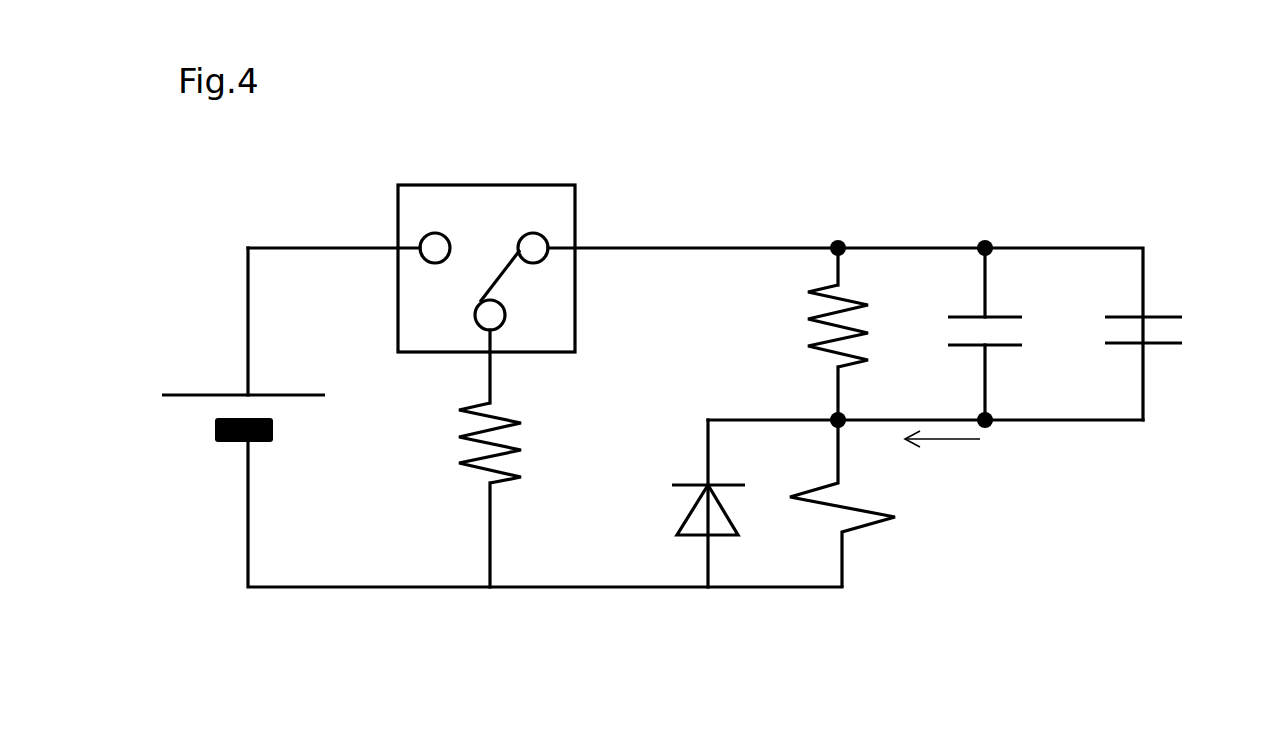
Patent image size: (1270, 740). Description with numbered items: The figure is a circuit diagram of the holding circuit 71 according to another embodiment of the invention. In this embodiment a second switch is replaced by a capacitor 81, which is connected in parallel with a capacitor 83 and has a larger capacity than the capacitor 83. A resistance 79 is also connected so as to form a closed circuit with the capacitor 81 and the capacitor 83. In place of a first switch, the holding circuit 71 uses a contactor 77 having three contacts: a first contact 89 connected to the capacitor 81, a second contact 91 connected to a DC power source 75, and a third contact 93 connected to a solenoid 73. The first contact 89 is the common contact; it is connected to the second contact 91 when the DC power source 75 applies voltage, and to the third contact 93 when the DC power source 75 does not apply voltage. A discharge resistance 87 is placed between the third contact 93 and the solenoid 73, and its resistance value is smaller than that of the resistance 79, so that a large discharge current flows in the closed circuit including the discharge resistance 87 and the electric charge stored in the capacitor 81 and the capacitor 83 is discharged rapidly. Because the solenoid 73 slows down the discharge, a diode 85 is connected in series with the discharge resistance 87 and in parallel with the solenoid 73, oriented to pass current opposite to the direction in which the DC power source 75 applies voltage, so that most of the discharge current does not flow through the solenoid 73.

The holding circuit 71 is at (1077, 212).
The solenoid 73 is at (910, 523).
The DC power source 75 is at (305, 425).
The contactor 77 is at (565, 185).
The resistance 79 is at (795, 322).
The capacitor 81 is at (1195, 322).
The capacitor 83 is at (1010, 298).
The diode 85 is at (660, 510).
The discharge resistance 87 is at (503, 412).
The first contact 89 is at (542, 236).
The second contact 91 is at (428, 237).
The third contact 93 is at (475, 317).